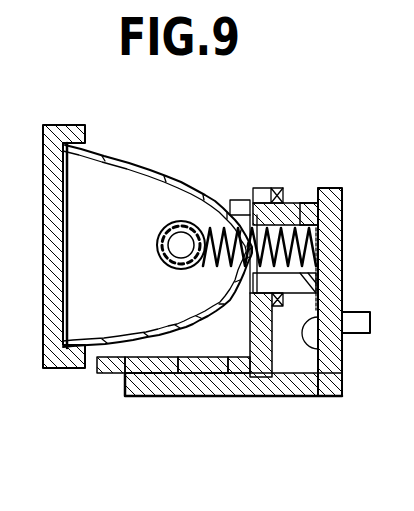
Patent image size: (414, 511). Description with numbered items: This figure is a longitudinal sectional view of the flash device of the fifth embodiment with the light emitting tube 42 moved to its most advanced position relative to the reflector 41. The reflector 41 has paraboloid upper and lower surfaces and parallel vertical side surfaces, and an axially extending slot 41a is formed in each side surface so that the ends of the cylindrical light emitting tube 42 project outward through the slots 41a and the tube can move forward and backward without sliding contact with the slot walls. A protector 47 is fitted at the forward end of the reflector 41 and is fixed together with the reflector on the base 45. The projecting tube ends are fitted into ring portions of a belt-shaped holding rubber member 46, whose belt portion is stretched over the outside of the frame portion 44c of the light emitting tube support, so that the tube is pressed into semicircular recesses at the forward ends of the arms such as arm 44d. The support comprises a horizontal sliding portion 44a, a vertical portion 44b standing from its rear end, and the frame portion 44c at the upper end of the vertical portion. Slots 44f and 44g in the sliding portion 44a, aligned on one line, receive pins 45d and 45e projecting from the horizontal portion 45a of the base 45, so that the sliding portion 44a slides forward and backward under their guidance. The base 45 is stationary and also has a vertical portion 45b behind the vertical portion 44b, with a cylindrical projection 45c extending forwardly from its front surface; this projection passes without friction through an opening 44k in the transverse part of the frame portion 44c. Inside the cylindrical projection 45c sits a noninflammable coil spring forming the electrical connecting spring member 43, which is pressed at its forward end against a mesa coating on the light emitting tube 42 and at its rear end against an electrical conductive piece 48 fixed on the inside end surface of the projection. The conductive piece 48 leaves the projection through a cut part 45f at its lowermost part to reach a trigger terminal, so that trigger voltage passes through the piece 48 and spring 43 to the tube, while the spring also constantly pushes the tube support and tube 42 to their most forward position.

The reflector 41 is at (108, 143).
The axially extending slot 41a is at (192, 205).
The light emitting tube 42 is at (178, 221).
The electrical connecting spring member 43 is at (211, 224).
The horizontal sliding portion 44a is at (112, 373).
The vertical portion 44b is at (276, 378).
The frame portion 44c is at (272, 190).
The arm 44d is at (239, 200).
The slot 44f is at (216, 385).
The slot 44g is at (147, 380).
The opening 44k is at (260, 188).
The base 45 is at (347, 212).
The horizontal portion 45a is at (125, 388).
The vertical portion 45b is at (325, 246).
The cylindrical projection 45c is at (321, 191).
The pin 45d is at (242, 365).
The pin 45e is at (170, 365).
The cut part 45f is at (302, 284).
The holding rubber member 46 is at (303, 203).
The protector 47 is at (58, 368).
The electrical conductive piece 48 is at (304, 359).